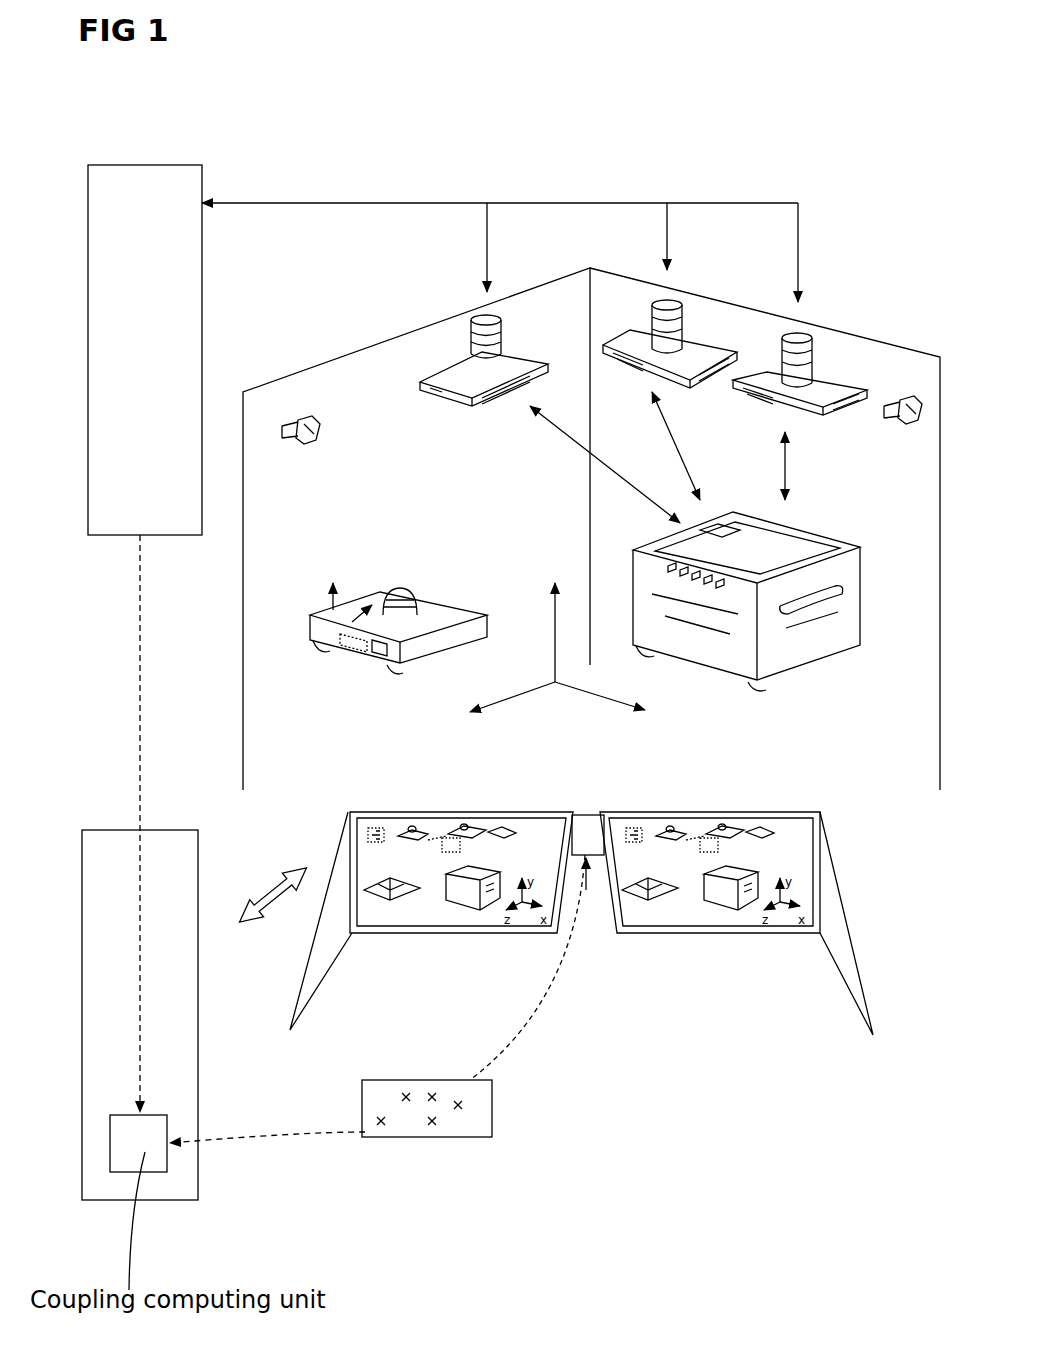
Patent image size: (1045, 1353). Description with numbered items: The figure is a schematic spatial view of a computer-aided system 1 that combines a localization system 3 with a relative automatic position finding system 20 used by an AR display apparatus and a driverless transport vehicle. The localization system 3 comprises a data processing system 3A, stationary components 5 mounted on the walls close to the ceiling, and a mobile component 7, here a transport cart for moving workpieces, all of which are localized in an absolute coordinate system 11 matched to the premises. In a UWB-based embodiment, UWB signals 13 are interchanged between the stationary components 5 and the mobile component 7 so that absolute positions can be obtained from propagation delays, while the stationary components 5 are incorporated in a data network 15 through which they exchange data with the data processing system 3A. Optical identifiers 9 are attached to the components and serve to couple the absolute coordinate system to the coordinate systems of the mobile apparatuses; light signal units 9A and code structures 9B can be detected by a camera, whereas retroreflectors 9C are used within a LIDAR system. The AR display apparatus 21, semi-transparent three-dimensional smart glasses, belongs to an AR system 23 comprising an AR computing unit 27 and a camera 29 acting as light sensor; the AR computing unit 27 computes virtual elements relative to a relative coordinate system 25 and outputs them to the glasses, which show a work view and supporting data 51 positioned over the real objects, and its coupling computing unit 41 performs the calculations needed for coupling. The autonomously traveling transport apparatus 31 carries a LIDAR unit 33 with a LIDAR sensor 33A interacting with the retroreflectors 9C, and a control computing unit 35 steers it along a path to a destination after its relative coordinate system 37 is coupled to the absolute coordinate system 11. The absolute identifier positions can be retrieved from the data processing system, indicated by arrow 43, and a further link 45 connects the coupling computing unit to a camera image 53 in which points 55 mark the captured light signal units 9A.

The computer-aided system 1 is at (888, 94).
The localization system 3 is at (792, 173).
The data processing system 3A is at (146, 165).
The stationary components 5 is at (448, 400).
The mobile component 7 is at (815, 535).
The optical identifiers 9 is at (890, 328).
The light signal units 9A is at (465, 345).
The code structures 9B is at (512, 402).
The retroreflectors 9C is at (312, 440).
The absolute coordinate system 11 is at (568, 696).
The UWB signals 13 is at (565, 448).
The data network 15 is at (578, 203).
The automatic position finding system 20 is at (596, 814).
The AR display apparatus 21 is at (872, 928).
The AR system 23 is at (360, 1208).
The relative coordinate system 25 is at (525, 950).
The AR computing unit 27 is at (118, 830).
The camera 29 is at (586, 812).
The transport apparatus 31 is at (447, 592).
The LIDAR unit 33 is at (370, 586).
The LIDAR sensor 33A is at (400, 587).
The control computing unit 35 is at (340, 660).
The relative coordinate system 37 is at (312, 605).
The coupling computing unit 41 is at (148, 1110).
The arrow 43 is at (137, 648).
The data link 45 is at (264, 1136).
The supporting data 51 is at (385, 824).
The camera image 53 is at (460, 1112).
The points 55 is at (432, 1092).